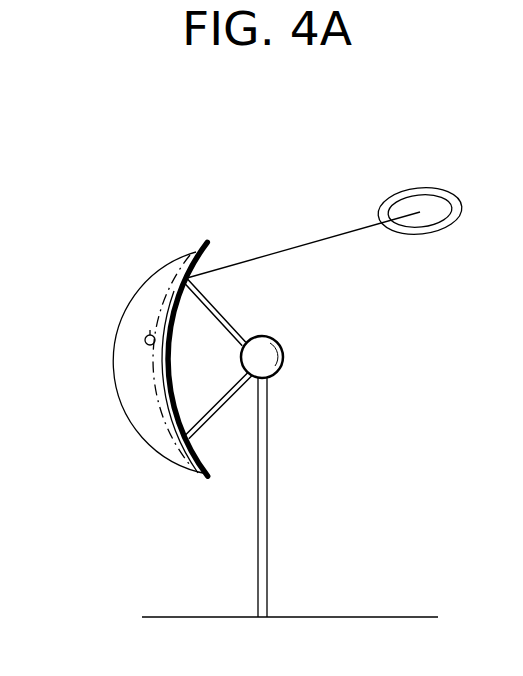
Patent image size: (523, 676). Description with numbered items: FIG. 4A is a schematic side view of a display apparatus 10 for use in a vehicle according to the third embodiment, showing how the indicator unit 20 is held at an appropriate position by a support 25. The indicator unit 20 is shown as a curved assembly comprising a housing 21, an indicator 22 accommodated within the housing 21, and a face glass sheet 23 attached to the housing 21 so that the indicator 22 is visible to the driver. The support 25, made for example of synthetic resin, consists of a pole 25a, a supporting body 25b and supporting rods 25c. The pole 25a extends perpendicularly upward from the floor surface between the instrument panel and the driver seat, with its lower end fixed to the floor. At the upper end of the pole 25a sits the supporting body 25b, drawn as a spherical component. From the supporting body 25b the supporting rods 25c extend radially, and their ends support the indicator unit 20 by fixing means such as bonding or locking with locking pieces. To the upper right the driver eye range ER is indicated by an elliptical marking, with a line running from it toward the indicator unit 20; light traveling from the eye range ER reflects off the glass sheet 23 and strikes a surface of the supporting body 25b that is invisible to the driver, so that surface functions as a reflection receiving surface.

The display apparatus 10 is at (298, 139).
The indicator unit 20 is at (172, 251).
The housing 21 is at (126, 278).
The indicator 22 is at (148, 258).
The face glass sheet 23 is at (187, 468).
The support 25 is at (285, 346).
The pole 25a is at (268, 490).
The supporting body 25b is at (261, 335).
The supporting rods 25c is at (195, 312).
The driver eye range ER is at (424, 200).